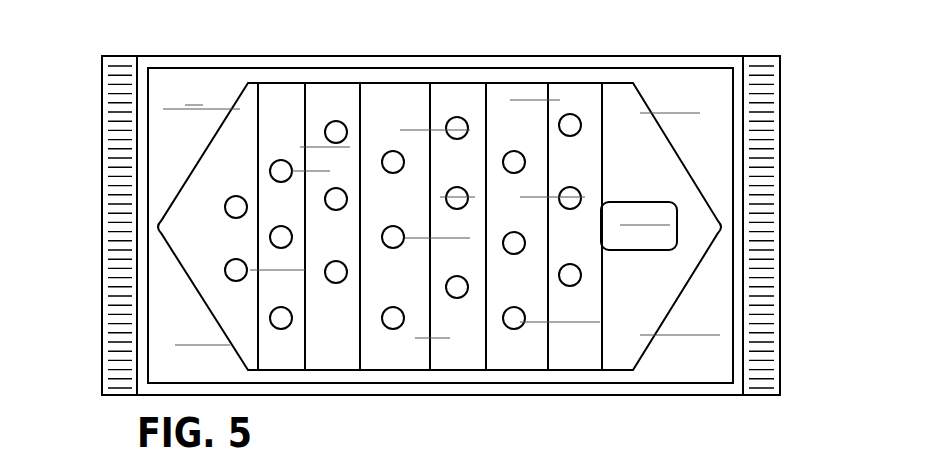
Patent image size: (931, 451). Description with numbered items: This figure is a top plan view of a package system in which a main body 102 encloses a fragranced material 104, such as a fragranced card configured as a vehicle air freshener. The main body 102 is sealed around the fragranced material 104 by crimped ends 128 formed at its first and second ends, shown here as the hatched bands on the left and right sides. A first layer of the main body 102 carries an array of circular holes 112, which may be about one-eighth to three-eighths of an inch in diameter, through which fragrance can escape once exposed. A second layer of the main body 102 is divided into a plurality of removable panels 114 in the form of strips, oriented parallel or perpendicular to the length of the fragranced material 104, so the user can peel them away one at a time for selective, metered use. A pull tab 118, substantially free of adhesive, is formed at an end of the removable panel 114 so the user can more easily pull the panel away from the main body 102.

The main body 102 is at (690, 77).
The fragranced material 104 is at (700, 363).
The holes 112 is at (457, 117).
The removable panels 114 is at (345, 83).
The pull tab 118 is at (160, 217).
The crimped ends 128 is at (102, 152).